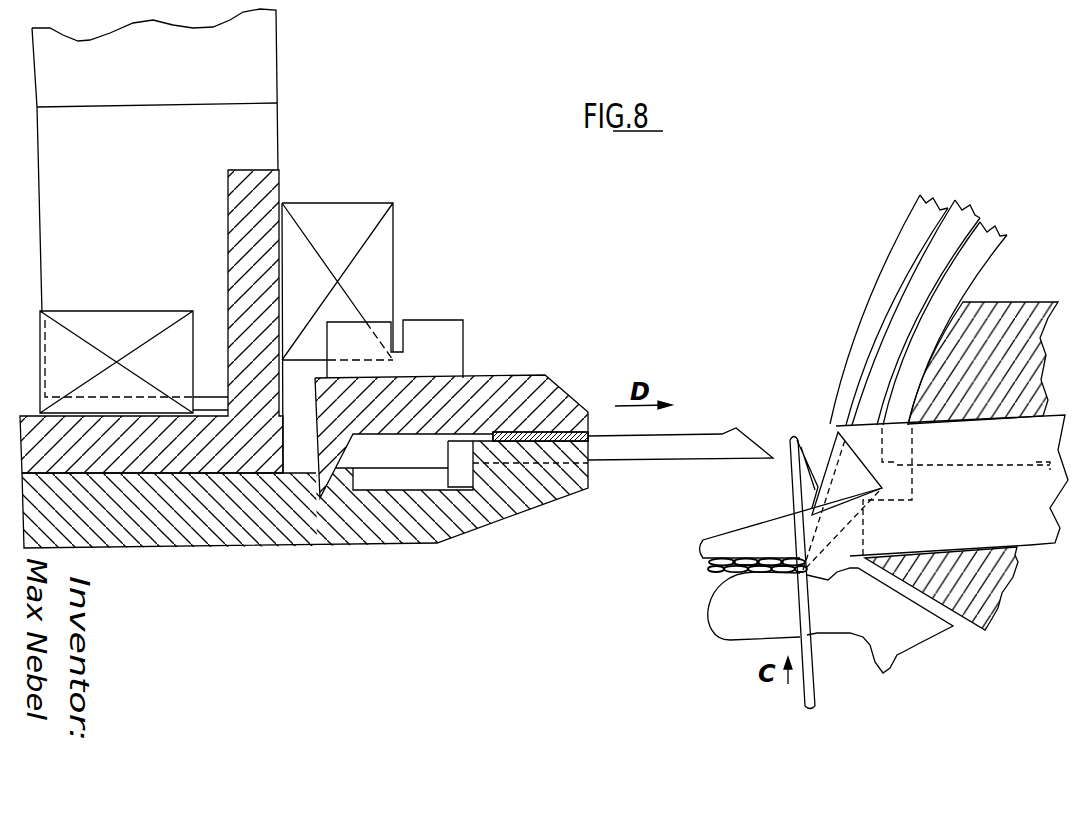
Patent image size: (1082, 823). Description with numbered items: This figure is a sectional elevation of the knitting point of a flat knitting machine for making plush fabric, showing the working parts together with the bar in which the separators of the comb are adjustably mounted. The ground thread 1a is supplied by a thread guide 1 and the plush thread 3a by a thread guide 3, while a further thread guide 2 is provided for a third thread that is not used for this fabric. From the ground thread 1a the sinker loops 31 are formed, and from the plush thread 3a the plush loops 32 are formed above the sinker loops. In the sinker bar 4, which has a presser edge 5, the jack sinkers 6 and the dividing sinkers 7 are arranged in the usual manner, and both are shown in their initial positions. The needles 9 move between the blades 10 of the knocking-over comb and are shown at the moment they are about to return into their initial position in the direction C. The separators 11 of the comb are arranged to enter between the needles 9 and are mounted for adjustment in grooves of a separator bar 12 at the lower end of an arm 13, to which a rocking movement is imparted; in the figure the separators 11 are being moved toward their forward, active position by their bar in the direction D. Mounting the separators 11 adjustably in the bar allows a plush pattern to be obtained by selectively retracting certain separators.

The thread guide 1 is at (997, 233).
The thread guide 2 is at (964, 206).
The thread guide 3 is at (929, 203).
The ground thread 1a is at (812, 510).
The plush thread 3a is at (832, 443).
The sinker bar 4 is at (1000, 590).
The presser edge 5 is at (790, 505).
The jack sinkers 6 is at (1037, 550).
The dividing sinkers 7 is at (1048, 466).
The needles 9 is at (812, 672).
The blades of the knocking-over comb 10 is at (717, 628).
The separators 11 is at (702, 440).
The separator bar 12 is at (483, 518).
The arm 13 is at (277, 90).
The sinker loops 31 is at (778, 557).
The plush loops 32 is at (752, 560).